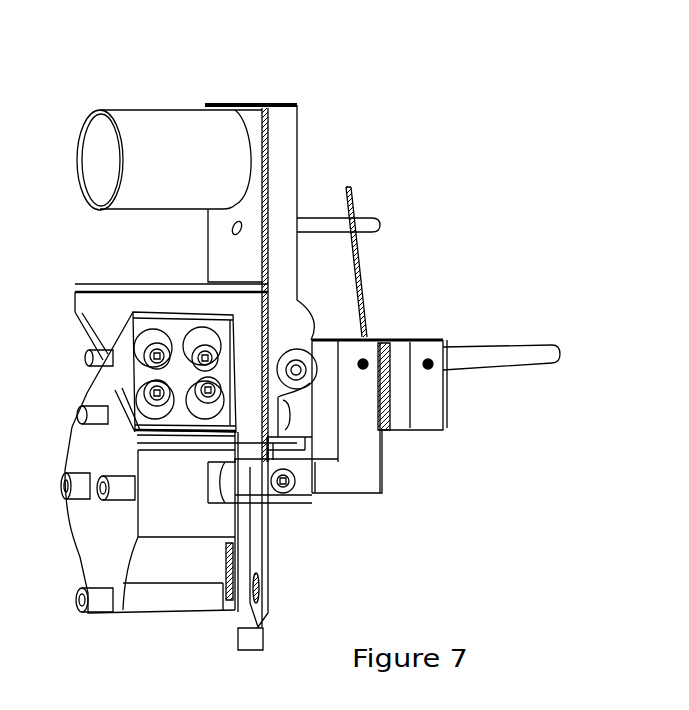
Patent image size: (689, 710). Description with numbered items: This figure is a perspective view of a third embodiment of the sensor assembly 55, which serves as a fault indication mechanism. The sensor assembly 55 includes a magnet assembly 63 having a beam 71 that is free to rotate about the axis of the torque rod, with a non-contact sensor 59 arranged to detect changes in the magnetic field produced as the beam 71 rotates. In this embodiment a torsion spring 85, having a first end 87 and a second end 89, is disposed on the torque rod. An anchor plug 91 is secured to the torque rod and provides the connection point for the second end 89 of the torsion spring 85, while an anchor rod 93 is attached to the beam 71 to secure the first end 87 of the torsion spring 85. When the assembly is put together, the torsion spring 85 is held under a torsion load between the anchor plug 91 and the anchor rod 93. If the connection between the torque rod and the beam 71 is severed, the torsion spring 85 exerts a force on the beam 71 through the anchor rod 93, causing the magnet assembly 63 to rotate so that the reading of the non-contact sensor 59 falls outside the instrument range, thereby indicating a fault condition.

The sensor assembly 55 is at (268, 77).
The non-contact sensor 59 is at (135, 108).
The magnet assembly 63 is at (300, 68).
The beam 71 is at (297, 176).
The torsion spring 85 is at (380, 337).
The first end 87 is at (360, 260).
The second end 89 is at (390, 410).
The anchor plug 91 is at (447, 423).
The anchor rod 93 is at (362, 218).